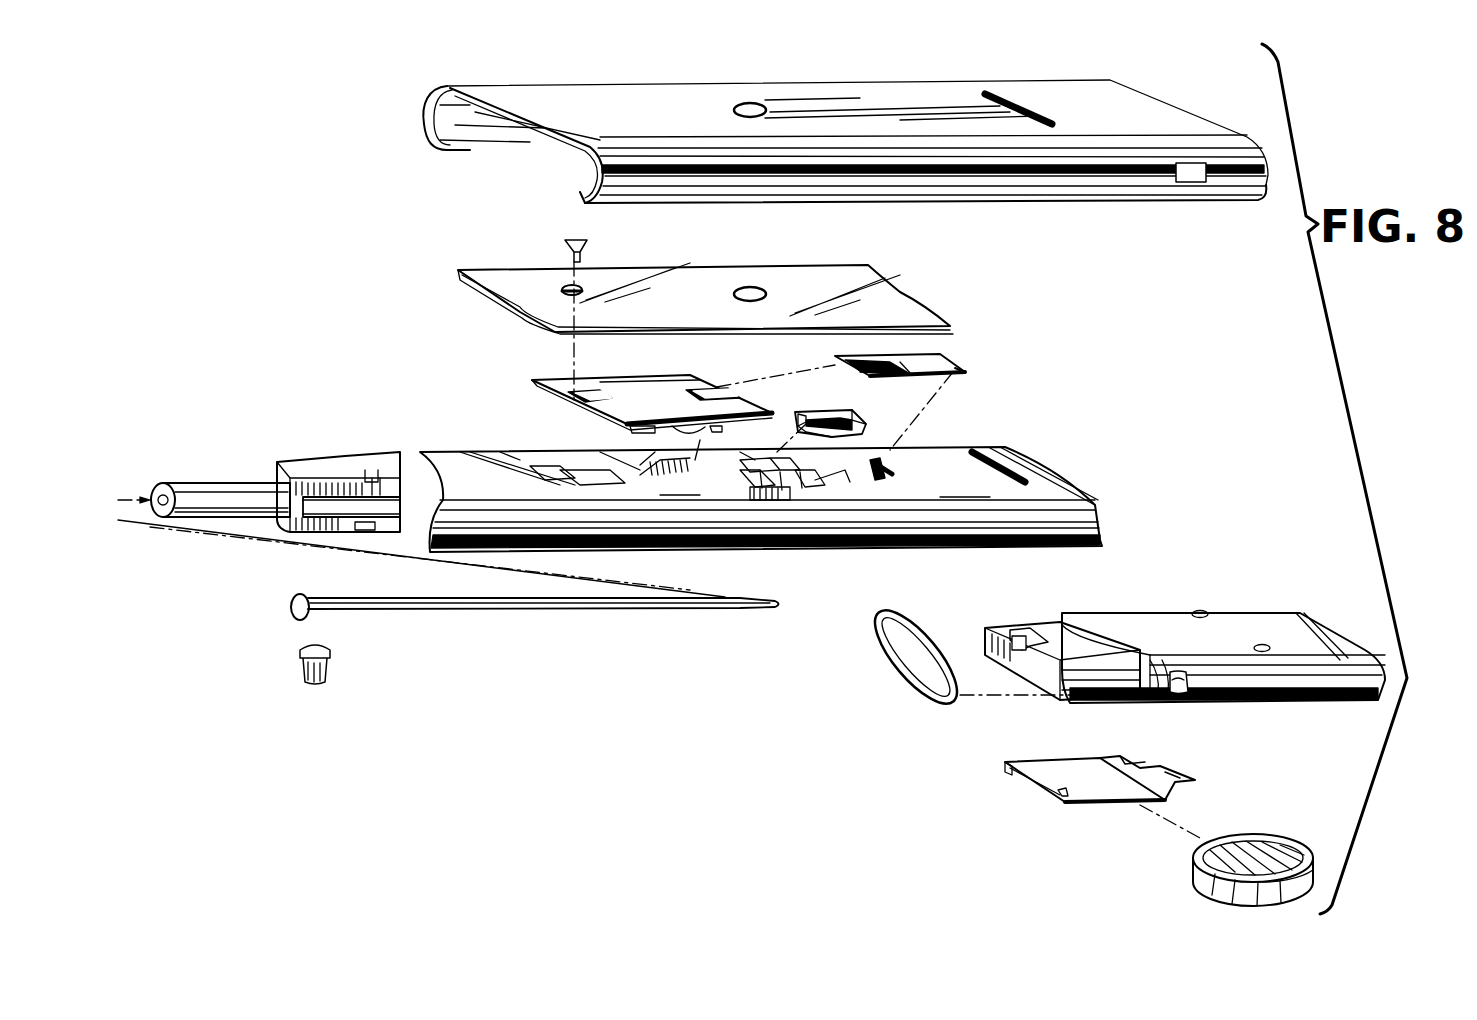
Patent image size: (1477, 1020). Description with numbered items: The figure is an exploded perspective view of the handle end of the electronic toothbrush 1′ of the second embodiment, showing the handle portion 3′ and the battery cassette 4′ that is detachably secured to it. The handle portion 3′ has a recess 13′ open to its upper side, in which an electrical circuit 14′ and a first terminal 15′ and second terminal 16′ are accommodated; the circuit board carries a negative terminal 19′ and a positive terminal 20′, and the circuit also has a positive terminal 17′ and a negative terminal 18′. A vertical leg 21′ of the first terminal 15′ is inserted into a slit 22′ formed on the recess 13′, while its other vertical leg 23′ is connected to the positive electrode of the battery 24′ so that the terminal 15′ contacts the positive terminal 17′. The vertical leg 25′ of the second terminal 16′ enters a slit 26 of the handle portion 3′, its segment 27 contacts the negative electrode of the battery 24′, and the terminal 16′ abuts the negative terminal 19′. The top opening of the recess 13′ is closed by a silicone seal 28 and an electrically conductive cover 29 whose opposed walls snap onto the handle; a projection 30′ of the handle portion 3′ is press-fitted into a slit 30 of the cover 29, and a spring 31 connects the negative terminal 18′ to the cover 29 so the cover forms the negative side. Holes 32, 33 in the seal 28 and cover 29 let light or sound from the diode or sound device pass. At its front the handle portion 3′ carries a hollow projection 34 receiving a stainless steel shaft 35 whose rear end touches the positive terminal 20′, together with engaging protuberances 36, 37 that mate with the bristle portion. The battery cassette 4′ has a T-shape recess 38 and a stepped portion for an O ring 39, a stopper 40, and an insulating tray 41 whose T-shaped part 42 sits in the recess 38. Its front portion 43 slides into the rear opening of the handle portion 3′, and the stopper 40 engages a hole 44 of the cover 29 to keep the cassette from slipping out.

The electronic toothbrush 1′ is at (425, 354).
The handle portion 3′ is at (825, 556).
The battery cassette 4′ is at (1365, 702).
The recess 13′ is at (678, 500).
The electrical circuit 14′ is at (658, 385).
The first terminal 15′ is at (816, 413).
The second terminal 16′ is at (942, 357).
The positive terminal 17′ is at (730, 428).
The negative terminal 18′ is at (542, 394).
The negative terminal 19′ is at (704, 392).
The positive terminal 20′ is at (583, 412).
The vertical leg 21′ is at (800, 428).
The slit 22′ is at (766, 500).
The vertical leg 23′ is at (865, 430).
The battery 24′ is at (1186, 860).
The vertical leg 25′ is at (966, 368).
The slit 26 is at (890, 470).
The segment 27 is at (925, 373).
The silicone seal 28 is at (848, 272).
The electrically conductive cover 29 is at (1040, 186).
The slit 30 is at (1018, 108).
The projection 30′ is at (1016, 465).
The spring 31 is at (569, 248).
The hole 32 is at (750, 288).
The hole 33 is at (748, 105).
The hollow projection 34 is at (210, 484).
The stainless steel shaft 35 is at (612, 613).
The engaging protuberance 36 is at (338, 505).
The engaging protuberance 37 is at (371, 484).
The T-shape recess 38 is at (1028, 630).
The O ring 39 is at (920, 625).
The stopper 40 is at (1178, 692).
The tray 41 is at (1032, 786).
The T-shaped part 42 is at (1195, 768).
The front portion 43 is at (1080, 672).
The hole 44 is at (1193, 176).